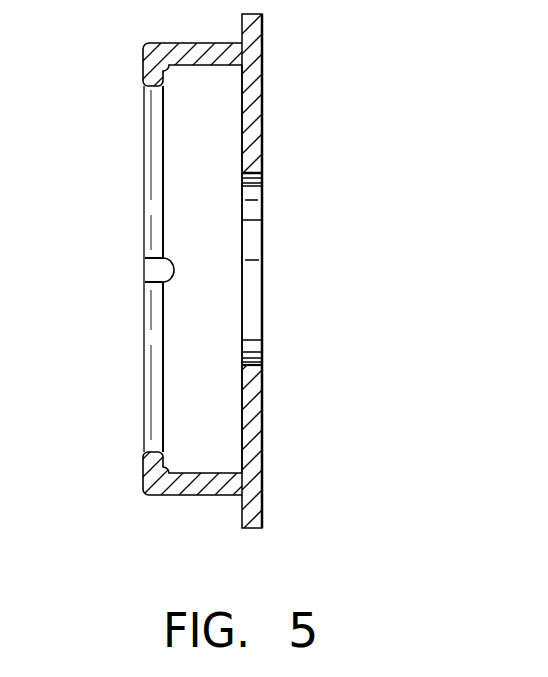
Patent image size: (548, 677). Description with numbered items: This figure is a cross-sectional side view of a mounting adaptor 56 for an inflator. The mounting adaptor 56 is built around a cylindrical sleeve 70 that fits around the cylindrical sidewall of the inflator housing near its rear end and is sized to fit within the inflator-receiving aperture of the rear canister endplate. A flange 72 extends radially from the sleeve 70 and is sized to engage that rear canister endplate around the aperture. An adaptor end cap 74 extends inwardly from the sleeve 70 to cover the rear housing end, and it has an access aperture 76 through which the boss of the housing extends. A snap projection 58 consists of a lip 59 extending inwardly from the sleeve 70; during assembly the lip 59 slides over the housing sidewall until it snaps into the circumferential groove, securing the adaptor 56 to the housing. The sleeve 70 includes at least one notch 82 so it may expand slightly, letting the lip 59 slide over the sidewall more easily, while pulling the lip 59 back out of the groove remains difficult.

The mounting adaptor 56 is at (140, 117).
The snap projection 58 is at (162, 80).
The lip 59 is at (145, 463).
The cylindrical sleeve 70 is at (162, 288).
The flange 72 is at (238, 510).
The adaptor end cap 74 is at (242, 106).
The access aperture 76 is at (248, 183).
The notch 82 is at (168, 263).